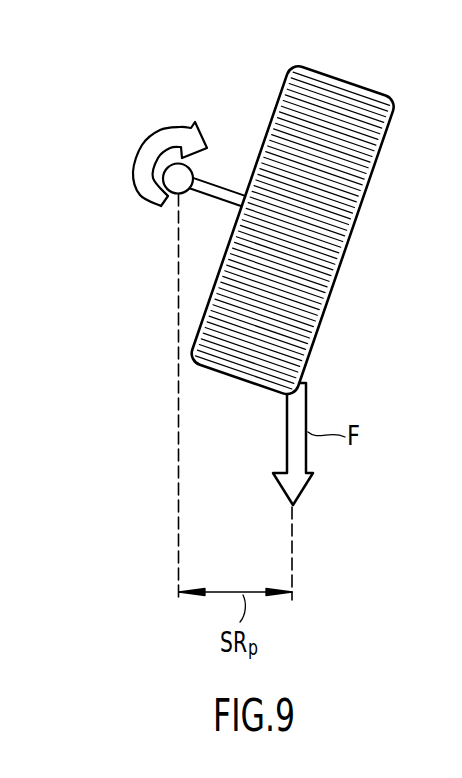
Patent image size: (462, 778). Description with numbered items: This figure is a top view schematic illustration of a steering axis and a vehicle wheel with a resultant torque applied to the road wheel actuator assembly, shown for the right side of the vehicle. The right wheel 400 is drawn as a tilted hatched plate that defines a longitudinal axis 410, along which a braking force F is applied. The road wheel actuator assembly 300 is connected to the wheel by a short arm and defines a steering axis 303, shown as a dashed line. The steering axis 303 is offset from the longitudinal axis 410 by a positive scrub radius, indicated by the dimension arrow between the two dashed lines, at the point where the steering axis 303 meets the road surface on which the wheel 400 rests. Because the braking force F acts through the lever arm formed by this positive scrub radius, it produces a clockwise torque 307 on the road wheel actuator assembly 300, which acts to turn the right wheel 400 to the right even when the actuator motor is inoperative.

The road wheel actuator assembly 300 is at (235, 146).
The steering axis 303 is at (178, 512).
The clockwise torque 307 is at (156, 130).
The right wheel 400 is at (385, 137).
The longitudinal axis 410 is at (292, 551).